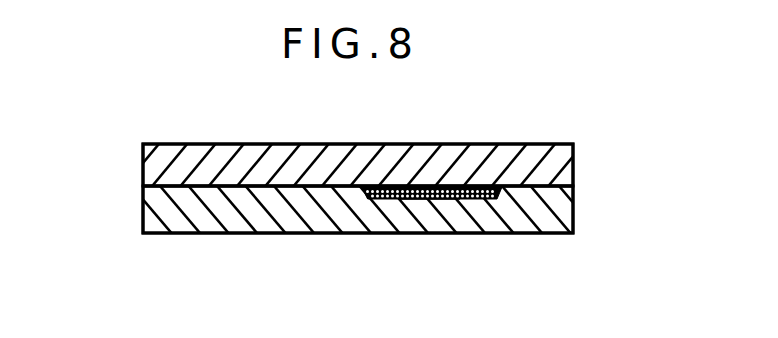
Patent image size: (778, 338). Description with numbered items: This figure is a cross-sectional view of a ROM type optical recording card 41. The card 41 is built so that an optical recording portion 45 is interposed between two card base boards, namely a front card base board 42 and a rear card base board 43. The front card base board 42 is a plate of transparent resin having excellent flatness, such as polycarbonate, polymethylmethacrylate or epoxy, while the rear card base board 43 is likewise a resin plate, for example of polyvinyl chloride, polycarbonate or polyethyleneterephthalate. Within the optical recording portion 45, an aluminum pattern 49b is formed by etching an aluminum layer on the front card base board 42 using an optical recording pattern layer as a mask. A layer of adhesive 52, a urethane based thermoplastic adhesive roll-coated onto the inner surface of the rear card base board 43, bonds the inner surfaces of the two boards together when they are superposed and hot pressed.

The ROM type optical recording card 41 is at (137, 185).
The front card base board 42 is at (542, 145).
The rear card base board 43 is at (542, 217).
The optical recording portion 45 is at (445, 186).
The aluminum pattern 49b is at (362, 189).
The layer of adhesive 52 is at (428, 201).